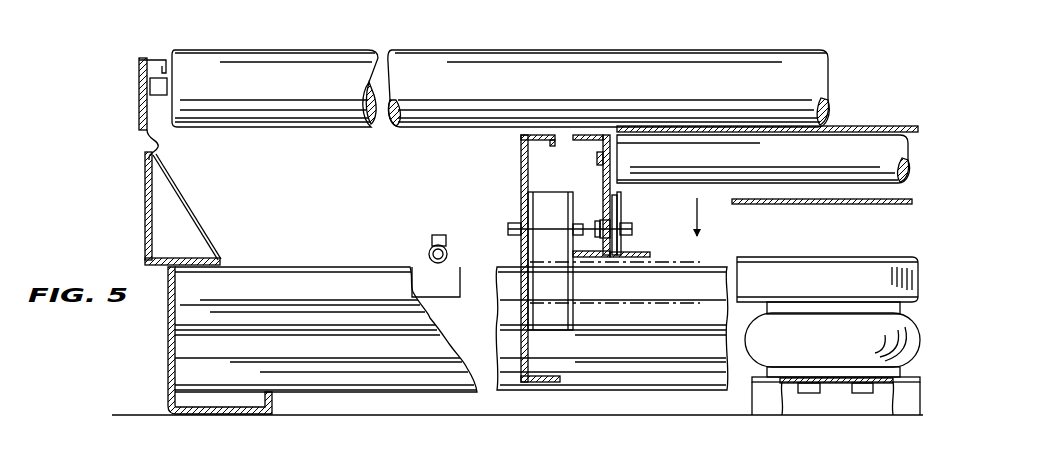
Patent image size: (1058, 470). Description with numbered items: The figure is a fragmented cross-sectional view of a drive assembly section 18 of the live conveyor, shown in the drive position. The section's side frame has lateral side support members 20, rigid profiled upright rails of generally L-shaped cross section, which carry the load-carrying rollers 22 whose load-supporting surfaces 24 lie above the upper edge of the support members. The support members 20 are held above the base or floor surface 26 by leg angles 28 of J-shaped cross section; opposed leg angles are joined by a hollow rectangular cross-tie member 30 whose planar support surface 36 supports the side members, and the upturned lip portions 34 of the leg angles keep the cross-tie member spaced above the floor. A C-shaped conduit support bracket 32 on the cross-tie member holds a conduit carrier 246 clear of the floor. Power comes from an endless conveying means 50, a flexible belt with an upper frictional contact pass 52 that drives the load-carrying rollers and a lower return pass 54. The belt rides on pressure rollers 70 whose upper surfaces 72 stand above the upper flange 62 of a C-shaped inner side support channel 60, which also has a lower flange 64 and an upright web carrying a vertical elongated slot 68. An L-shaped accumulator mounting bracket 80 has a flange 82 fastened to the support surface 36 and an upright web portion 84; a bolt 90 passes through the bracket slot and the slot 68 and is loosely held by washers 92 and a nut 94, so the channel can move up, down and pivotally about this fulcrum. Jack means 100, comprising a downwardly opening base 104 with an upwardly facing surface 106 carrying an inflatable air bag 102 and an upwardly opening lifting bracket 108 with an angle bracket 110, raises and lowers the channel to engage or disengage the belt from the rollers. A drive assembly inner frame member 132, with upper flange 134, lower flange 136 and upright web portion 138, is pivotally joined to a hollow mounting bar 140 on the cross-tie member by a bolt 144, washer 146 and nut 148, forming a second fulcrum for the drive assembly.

The assembly section 18 is at (172, 151).
The lateral side support member 20 is at (178, 208).
The load-carrying roller 22 is at (453, 75).
The load-supporting surface 24 is at (291, 50).
The base or floor surface 26 is at (130, 413).
The leg angle 28 is at (223, 356).
The cross-tie member 30 is at (294, 278).
The conduit support bracket 32 is at (422, 248).
The lip portion 34 is at (273, 398).
The planar support surface 36 is at (236, 260).
The endless conveying means 50 is at (778, 155).
The upper frictional contact pass 52 is at (873, 127).
The lower return pass 54 is at (874, 205).
The inner side support channel 60 is at (631, 138).
The upper flange 62 is at (583, 134).
The lower flange 64 is at (595, 262).
The elongated slot 68 is at (602, 222).
The pressure roller 70 is at (870, 163).
The upper surface 72 is at (858, 126).
The accumulator mounting bracket 80 is at (647, 218).
The flange 82 is at (650, 265).
The web portion 84 is at (618, 208).
The bolt 90 is at (595, 227).
The washer 92 is at (590, 260).
The nut 94 is at (564, 203).
The jack means 100 is at (848, 338).
The inflatable air bag 102 is at (843, 345).
The base 104 is at (791, 395).
The upwardly facing surface 106 is at (840, 393).
The lifting bracket 108 is at (827, 297).
The mounting angle bracket 110 is at (846, 270).
The drive assembly inner frame member 132 is at (518, 289).
The upper flange 134 is at (520, 152).
The lower flange 136 is at (545, 383).
The upright web portion 138 is at (522, 257).
The mounting bar 140 is at (545, 198).
The bolt 144 is at (507, 230).
The washer 146 is at (520, 218).
The nut 148 is at (550, 261).
The conduit carrier 246 is at (432, 243).